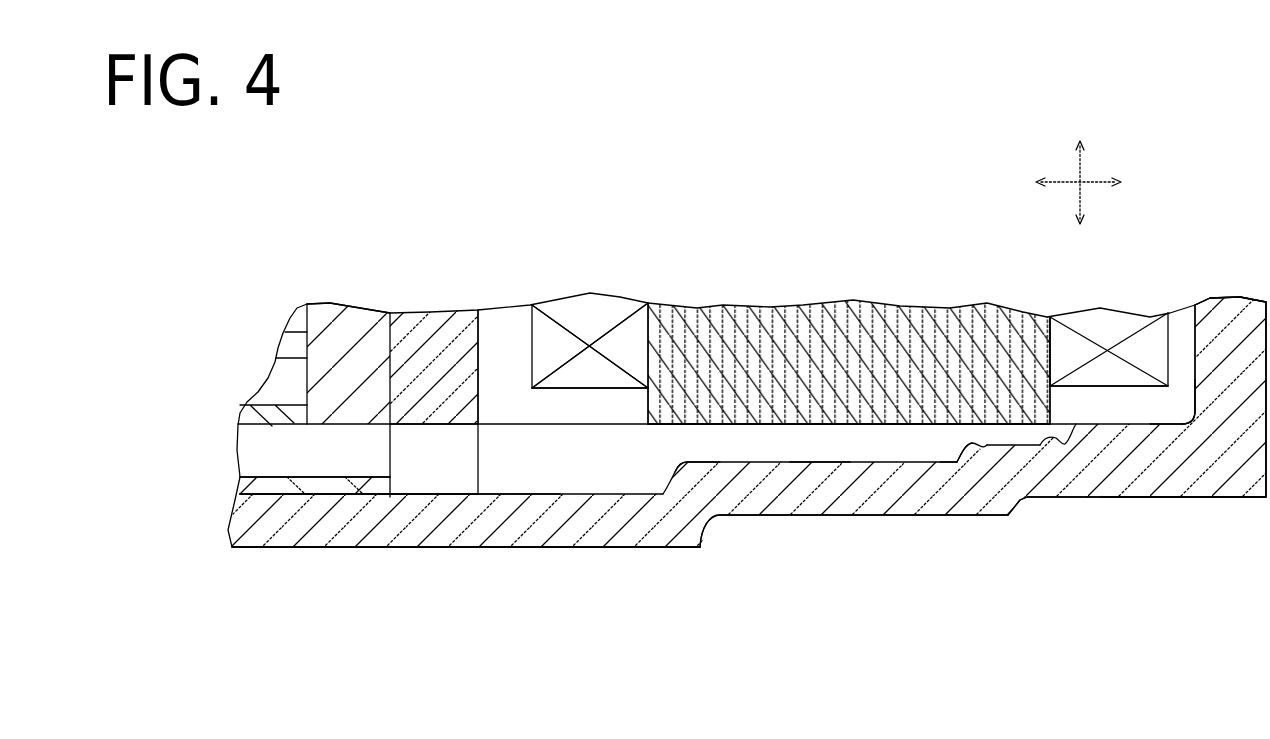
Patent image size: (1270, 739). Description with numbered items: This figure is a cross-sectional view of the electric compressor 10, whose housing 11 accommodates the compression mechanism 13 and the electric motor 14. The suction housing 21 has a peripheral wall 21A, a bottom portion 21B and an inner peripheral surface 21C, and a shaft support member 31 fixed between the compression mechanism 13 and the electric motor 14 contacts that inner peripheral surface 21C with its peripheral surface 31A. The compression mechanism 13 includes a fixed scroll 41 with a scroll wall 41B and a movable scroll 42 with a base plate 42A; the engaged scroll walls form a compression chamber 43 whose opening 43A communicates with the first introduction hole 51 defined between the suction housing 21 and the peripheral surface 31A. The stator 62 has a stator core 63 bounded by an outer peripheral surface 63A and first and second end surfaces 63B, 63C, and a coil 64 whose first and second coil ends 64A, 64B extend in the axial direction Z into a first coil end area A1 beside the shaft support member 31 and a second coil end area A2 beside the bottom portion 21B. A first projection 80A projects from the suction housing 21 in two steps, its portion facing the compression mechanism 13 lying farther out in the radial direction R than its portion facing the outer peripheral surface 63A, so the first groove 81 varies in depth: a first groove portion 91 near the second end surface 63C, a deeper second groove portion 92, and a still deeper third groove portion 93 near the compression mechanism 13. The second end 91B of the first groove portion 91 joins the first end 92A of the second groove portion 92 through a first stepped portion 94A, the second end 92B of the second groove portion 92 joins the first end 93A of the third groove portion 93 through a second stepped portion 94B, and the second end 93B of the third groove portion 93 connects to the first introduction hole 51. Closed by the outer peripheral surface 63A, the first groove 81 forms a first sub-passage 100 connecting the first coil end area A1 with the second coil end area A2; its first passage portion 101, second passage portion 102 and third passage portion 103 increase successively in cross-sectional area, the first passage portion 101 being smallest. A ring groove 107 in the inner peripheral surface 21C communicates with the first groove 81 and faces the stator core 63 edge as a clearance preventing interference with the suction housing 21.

The electric compressor 10 is at (1185, 152).
The housing 11 is at (1248, 430).
The compression mechanism 13 is at (275, 500).
The electric motor 14 is at (781, 432).
The suction housing 21 is at (1220, 500).
The peripheral wall 21A is at (1170, 462).
The bottom portion 21B is at (1233, 318).
The inner peripheral surface 21C is at (1122, 415).
The shaft support member 31 is at (433, 330).
The peripheral surface 31A is at (484, 432).
The fixed scroll 41 is at (285, 492).
The scroll wall 41B is at (315, 548).
The movable scroll 42 is at (333, 312).
The base plate 42A is at (348, 289).
The compression chamber 43 is at (282, 451).
The opening 43A is at (368, 470).
The first introduction hole 51 is at (420, 485).
The stator 62 is at (708, 262).
The stator core 63 is at (690, 325).
The outer peripheral surface 63A is at (842, 428).
The first end surface 63B is at (646, 410).
The second end surface 63C is at (1054, 333).
The coil 64 is at (639, 313).
The first coil end 64A is at (590, 305).
The second coil end 64B is at (1144, 334).
The first projection 80A is at (521, 548).
The first groove 81 is at (818, 462).
The first groove portion 91 is at (1005, 450).
The second end 91B is at (955, 420).
The second groove portion 92 is at (892, 462).
The first end 92A is at (972, 452).
The second end 92B is at (708, 527).
The third groove portion 93 is at (565, 484).
The first end 93A is at (658, 488).
The second end 93B is at (483, 487).
The first stepped portion 94A is at (960, 447).
The second stepped portion 94B is at (684, 460).
The first sub-passage 100 is at (818, 440).
The first passage portion 101 is at (1005, 431).
The second passage portion 102 is at (905, 441).
The third passage portion 103 is at (662, 447).
The ring groove 107 is at (1052, 440).
The first coil end area A1 is at (505, 340).
The second coil end area A2 is at (1143, 407).
The radial direction R is at (1080, 168).
The axial direction Z is at (1088, 183).